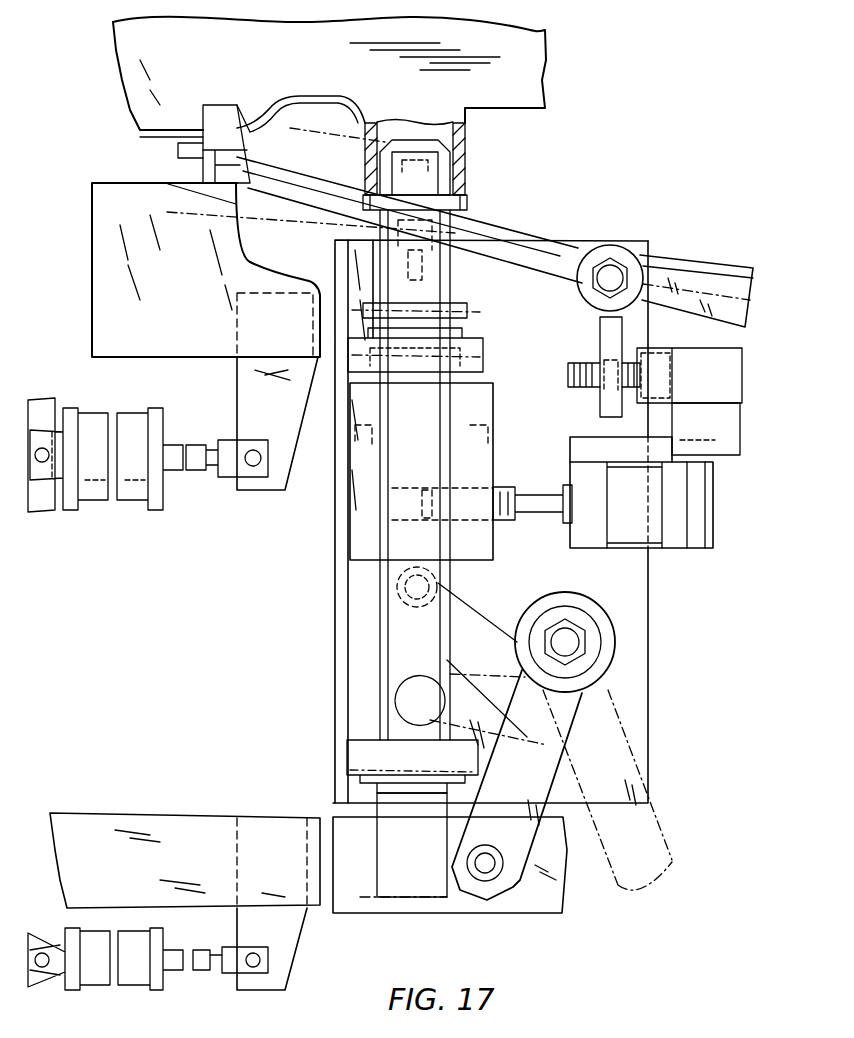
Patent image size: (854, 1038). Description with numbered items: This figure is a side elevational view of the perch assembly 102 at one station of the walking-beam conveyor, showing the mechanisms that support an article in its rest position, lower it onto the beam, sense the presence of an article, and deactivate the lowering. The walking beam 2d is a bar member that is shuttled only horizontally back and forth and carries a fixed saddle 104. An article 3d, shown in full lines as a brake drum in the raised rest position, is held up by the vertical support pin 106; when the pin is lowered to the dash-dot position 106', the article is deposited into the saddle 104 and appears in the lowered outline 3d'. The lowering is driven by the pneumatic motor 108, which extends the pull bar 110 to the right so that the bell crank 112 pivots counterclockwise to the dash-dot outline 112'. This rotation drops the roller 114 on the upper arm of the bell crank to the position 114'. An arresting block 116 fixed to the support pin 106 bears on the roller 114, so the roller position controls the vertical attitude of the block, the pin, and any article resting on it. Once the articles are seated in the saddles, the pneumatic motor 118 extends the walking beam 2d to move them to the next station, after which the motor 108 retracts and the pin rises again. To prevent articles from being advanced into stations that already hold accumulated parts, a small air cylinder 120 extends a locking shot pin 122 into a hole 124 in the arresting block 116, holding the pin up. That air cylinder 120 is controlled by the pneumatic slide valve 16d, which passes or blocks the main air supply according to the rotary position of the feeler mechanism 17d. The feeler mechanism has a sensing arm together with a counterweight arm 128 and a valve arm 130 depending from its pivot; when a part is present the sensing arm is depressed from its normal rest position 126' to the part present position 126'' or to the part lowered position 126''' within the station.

The perch assembly 102 is at (730, 113).
The saddle 104 is at (205, 162).
The vertical support pin 106 is at (442, 166).
The lowered support pin position 106' is at (437, 574).
The pneumatic motor 108 is at (138, 980).
The pull bar 110 is at (96, 854).
The bell crank 112 is at (533, 746).
The pivoted bell crank position 112' is at (644, 790).
The roller 114 is at (400, 604).
The dropped roller position 114' is at (414, 702).
The arresting block 116 is at (428, 425).
The pneumatic motor 118 is at (140, 504).
The air cylinder 120 is at (640, 530).
The locking shot pin 122 is at (504, 488).
The hole 124 is at (400, 490).
The normal rest position of sensing arm 126' is at (211, 128).
The part present rest position of sensing arm 126'' is at (153, 149).
The part lowered position of sensing arm 126''' is at (308, 217).
The counterweight arm 128 is at (748, 296).
The valve arm 130 is at (602, 336).
The walking beam 2d is at (156, 340).
The article 3d is at (329, 77).
The lowered article 3d' is at (311, 119).
The pneumatic slide valve 16d is at (732, 370).
The feeler mechanism 17d is at (664, 245).